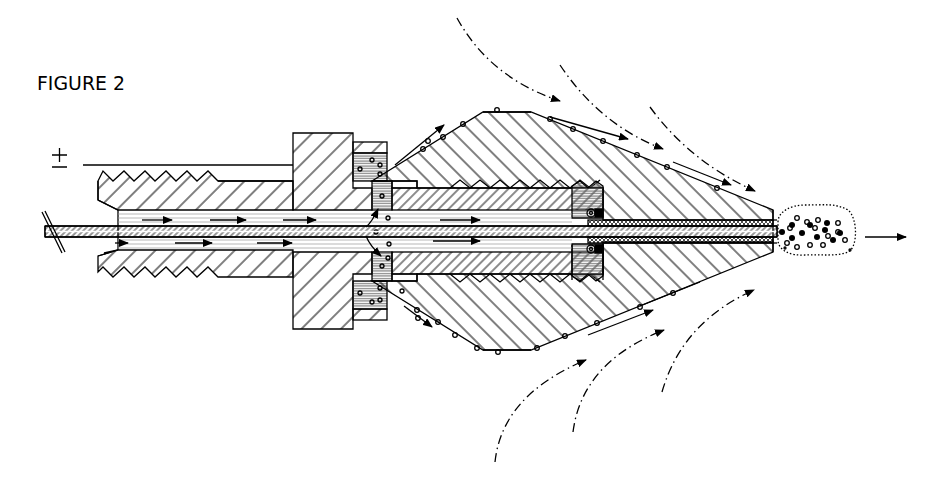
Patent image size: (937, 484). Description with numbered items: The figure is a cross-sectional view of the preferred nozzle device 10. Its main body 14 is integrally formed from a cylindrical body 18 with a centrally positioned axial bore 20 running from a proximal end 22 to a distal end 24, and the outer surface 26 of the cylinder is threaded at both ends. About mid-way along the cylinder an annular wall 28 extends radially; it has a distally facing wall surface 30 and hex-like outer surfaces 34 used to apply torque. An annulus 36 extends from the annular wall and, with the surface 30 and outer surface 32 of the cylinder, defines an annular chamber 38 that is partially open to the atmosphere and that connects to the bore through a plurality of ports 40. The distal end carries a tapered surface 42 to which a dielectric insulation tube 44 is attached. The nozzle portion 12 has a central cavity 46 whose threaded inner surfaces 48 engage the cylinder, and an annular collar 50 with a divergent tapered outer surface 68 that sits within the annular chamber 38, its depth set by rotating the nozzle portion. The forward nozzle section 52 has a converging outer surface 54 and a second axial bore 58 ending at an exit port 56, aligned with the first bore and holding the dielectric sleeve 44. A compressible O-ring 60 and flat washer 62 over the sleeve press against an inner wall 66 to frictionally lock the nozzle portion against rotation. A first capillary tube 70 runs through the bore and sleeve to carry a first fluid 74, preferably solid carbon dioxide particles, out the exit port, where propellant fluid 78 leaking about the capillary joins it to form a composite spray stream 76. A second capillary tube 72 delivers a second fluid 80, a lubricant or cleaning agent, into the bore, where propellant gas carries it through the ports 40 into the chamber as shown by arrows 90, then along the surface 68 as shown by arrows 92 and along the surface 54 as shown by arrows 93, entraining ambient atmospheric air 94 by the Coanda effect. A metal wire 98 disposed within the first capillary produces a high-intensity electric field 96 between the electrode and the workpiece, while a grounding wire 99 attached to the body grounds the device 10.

The nozzle device 10 is at (250, 88).
The nozzle portion 12 is at (472, 112).
The main body 14 is at (285, 282).
The cylindrical body 18 is at (250, 270).
The axial bore 20 is at (143, 240).
The proximal end 22 is at (98, 197).
The distal end 24 is at (584, 242).
The outer surface 26 is at (233, 181).
The annular wall 28 is at (368, 142).
The distally facing wall surface 30 is at (362, 297).
The outer surface 32 is at (365, 195).
The outer surfaces of the annular wall 34 is at (305, 133).
The annulus 36 is at (383, 153).
The annular chamber 38 is at (392, 163).
The ports 40 is at (373, 262).
The tapered surface 42 is at (580, 184).
The dielectric insulation tube 44 is at (660, 249).
The central cavity 46 is at (597, 263).
The inner surfaces 48 is at (488, 187).
The annular collar 50 is at (399, 174).
The forward nozzle section 52 is at (706, 176).
The outer surface of the nozzle section 54 is at (673, 296).
The exit port 56 is at (775, 213).
The second axial bore 58 is at (692, 221).
The O-ring 60 is at (595, 254).
The flat washer 62 is at (603, 251).
The inner wall 66 is at (603, 268).
The tapered outer surface 68 is at (463, 339).
The first capillary tube 70 is at (80, 226).
The second capillary tube 72 is at (78, 247).
The first fluid 74 is at (49, 227).
The composite spray stream 76 is at (823, 208).
The propellant fluid 78 is at (87, 249).
The second fluid 80 is at (49, 237).
The arrows 90 is at (380, 244).
The arrows 92 is at (427, 122).
The arrows 93 is at (586, 121).
The ambient atmospheric air 94 is at (490, 53).
The electric field 96 is at (851, 253).
The metal wire 98 is at (778, 249).
The grounding wire 99 is at (140, 165).